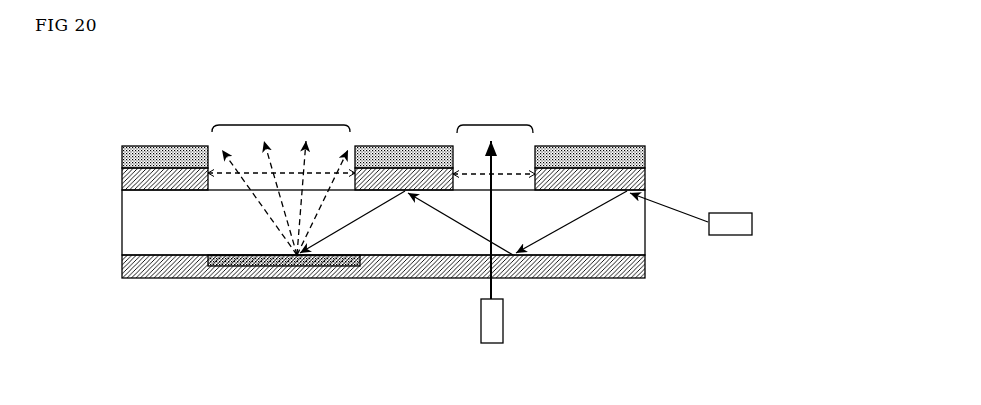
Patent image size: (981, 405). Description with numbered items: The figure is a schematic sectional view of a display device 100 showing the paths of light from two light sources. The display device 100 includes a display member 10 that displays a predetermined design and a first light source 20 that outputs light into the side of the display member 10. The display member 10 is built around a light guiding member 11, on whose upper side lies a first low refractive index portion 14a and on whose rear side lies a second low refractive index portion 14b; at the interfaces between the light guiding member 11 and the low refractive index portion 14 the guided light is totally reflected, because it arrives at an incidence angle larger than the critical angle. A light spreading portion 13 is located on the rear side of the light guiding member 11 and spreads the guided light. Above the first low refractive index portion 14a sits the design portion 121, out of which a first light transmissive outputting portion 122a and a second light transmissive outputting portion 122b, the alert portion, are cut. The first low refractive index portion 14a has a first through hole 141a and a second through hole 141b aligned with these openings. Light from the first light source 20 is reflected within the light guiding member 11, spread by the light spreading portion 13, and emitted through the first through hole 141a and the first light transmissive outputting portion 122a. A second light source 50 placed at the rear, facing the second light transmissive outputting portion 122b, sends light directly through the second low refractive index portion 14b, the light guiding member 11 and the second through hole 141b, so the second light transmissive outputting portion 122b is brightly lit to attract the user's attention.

The display member 10 is at (390, 88).
The light guiding member 11 is at (123, 233).
The light spreading portion 13 is at (240, 267).
The low refractive index portion 14 is at (625, 183).
The first low refractive index portion 14a is at (130, 187).
The second low refractive index portion 14b is at (123, 267).
The first light source 20 is at (732, 226).
The second light source 50 is at (492, 322).
The display device 100 is at (287, 353).
The design portion 121 is at (130, 157).
The first light transmissive outputting portion 122a is at (250, 124).
The second light transmissive outputting portion 122b is at (493, 125).
The first through hole 141a is at (213, 152).
The second through hole 141b is at (533, 170).